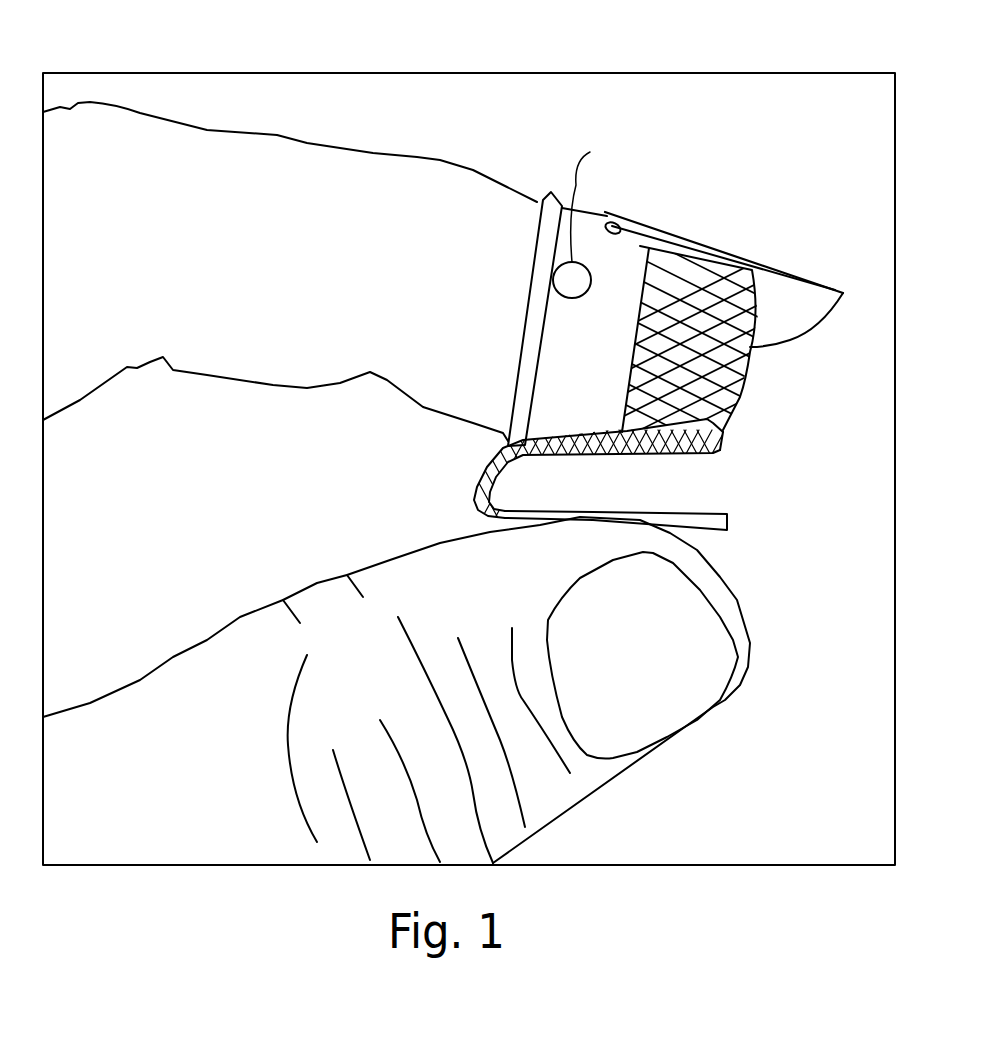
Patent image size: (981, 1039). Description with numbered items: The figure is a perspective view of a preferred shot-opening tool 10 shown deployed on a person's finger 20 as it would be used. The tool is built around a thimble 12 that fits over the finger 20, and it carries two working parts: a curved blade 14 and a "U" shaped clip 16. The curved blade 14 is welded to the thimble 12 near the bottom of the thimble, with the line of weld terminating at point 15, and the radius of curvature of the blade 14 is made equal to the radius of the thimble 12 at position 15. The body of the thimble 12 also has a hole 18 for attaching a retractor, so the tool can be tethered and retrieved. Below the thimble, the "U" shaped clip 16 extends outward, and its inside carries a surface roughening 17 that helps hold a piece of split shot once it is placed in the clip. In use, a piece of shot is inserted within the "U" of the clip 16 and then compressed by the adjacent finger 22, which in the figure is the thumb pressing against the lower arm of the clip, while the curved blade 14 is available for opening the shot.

The shot-opening tool 10 is at (764, 158).
The thimble 12 is at (752, 358).
The curved blade 14 is at (843, 293).
The point 15 is at (607, 222).
The "U" shaped clip 16 is at (727, 522).
The surface roughening 17 is at (647, 455).
The hole 18 is at (586, 220).
The finger 20 is at (417, 157).
The adjacent finger 22 is at (753, 633).